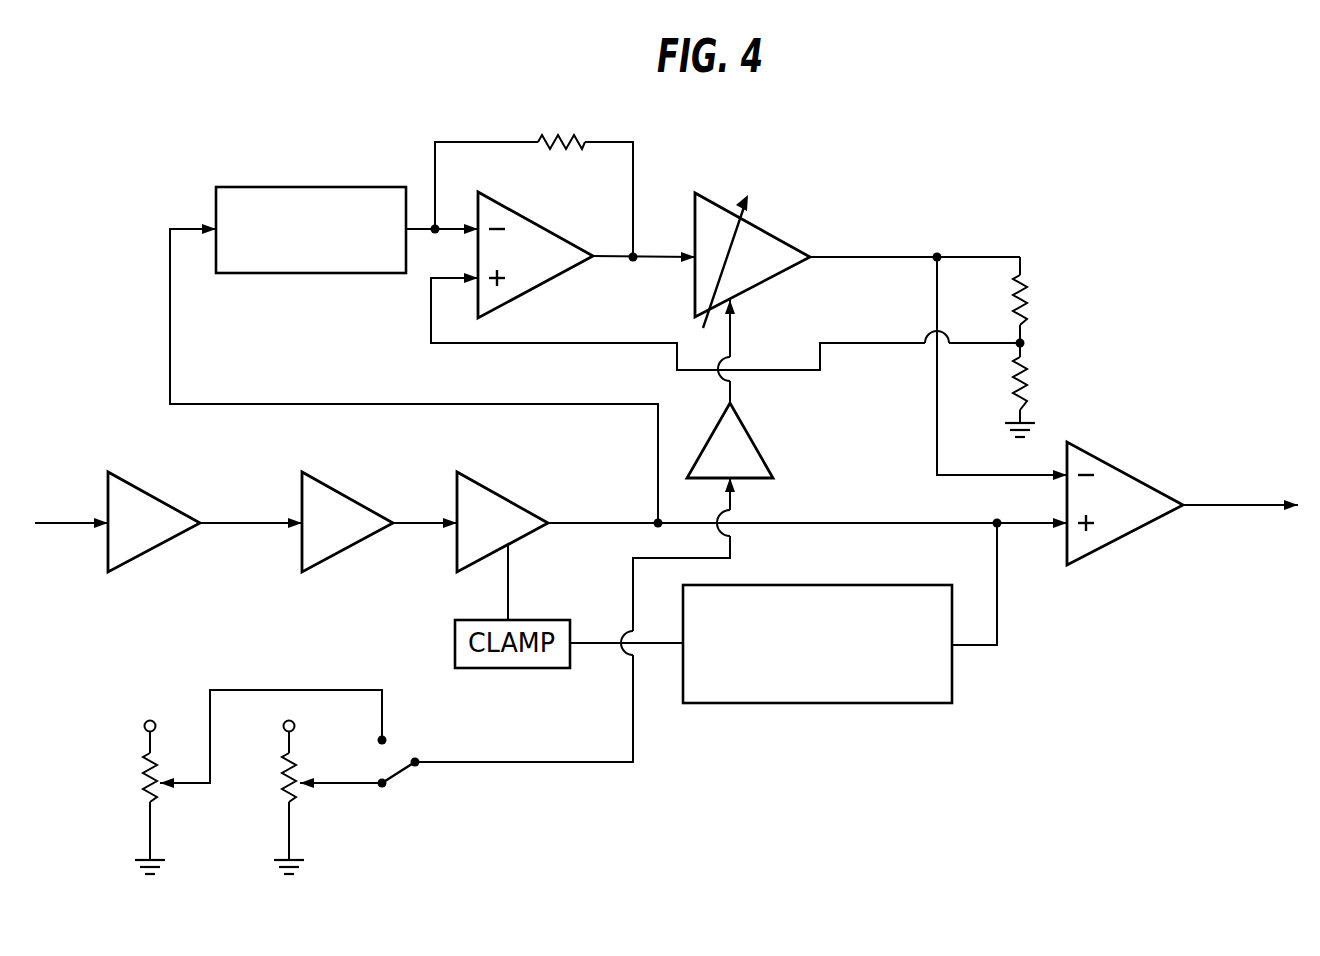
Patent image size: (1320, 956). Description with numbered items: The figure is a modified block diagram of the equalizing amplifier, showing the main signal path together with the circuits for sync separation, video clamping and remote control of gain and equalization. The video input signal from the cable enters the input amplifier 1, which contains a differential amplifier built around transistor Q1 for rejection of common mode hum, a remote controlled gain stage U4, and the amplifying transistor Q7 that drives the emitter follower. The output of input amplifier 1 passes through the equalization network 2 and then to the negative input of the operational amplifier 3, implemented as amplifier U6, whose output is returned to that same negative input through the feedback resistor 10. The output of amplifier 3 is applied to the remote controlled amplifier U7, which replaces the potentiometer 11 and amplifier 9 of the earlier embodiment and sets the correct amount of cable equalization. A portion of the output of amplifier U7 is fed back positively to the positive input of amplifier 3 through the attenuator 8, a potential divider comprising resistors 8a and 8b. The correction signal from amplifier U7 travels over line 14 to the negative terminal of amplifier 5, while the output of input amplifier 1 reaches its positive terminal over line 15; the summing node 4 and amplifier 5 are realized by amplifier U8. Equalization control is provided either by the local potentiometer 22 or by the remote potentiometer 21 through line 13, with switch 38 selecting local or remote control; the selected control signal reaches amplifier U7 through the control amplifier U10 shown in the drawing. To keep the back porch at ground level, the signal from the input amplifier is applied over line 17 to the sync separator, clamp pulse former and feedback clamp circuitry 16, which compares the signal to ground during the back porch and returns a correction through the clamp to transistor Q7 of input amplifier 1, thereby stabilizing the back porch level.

The input amplifier 1 is at (438, 452).
The equalization filter network 2 is at (313, 186).
The operational amplifier 3 is at (535, 256).
The summing node 4 is at (1182, 503).
The amplifier 5 is at (1182, 503).
The attenuator 8 is at (1020, 347).
The resistor 8a is at (1052, 300).
The resistor 8b is at (1032, 395).
The amplifier 9 is at (763, 260).
The feedback resistor 10 is at (570, 135).
The potentiometer 11 is at (763, 260).
The line 13 is at (296, 690).
The line 14 is at (936, 438).
The line 15 is at (1024, 528).
The sync separator, clamp pulse former and feedback clamp 16 is at (722, 760).
The line 17 is at (996, 574).
The remote potentiometer 21 is at (147, 791).
The local potentiometer 22 is at (286, 791).
The switch 38 is at (401, 790).
The differential amplifier transistor Q1 is at (130, 482).
The transistor Q7 is at (478, 478).
The remote controlled gain stage U4 is at (322, 480).
The amplifier U6 is at (520, 216).
The remote control gain stage U7 is at (832, 225).
The amplifier U8 is at (1162, 461).
The amplifier U10 is at (752, 442).